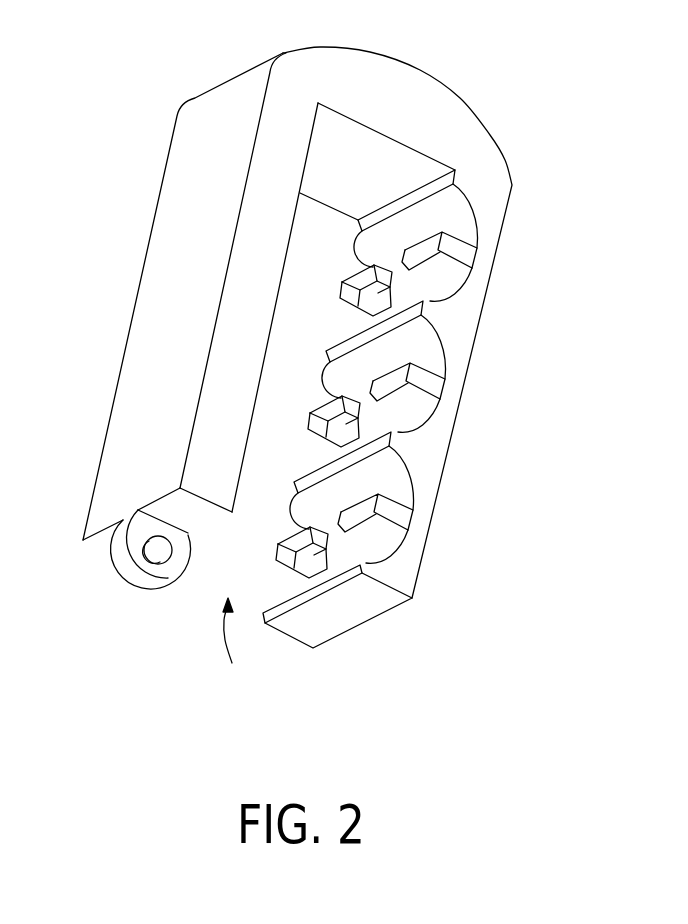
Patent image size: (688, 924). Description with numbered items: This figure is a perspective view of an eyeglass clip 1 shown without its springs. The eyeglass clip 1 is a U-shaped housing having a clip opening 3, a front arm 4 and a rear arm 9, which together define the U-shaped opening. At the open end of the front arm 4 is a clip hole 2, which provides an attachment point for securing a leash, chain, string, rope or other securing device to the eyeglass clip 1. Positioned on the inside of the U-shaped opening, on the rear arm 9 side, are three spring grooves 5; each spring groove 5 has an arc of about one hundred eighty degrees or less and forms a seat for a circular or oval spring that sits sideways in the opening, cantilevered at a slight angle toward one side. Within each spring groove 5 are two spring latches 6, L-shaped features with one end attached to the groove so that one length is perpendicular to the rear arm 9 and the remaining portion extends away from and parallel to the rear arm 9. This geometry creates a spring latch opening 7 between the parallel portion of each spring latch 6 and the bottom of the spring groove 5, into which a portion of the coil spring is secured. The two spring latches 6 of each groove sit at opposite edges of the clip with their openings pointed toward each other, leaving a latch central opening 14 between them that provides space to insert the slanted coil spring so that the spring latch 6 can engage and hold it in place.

The eyeglass clip 1 is at (418, 68).
The clip hole 2 is at (122, 563).
The clip opening 3 is at (236, 642).
The front arm 4 is at (155, 327).
The spring grooves 5 is at (447, 218).
The spring latch 6 is at (462, 247).
The spring latch opening 7 is at (428, 272).
The rear arm 9 is at (412, 598).
The latch central opening 14 is at (412, 547).